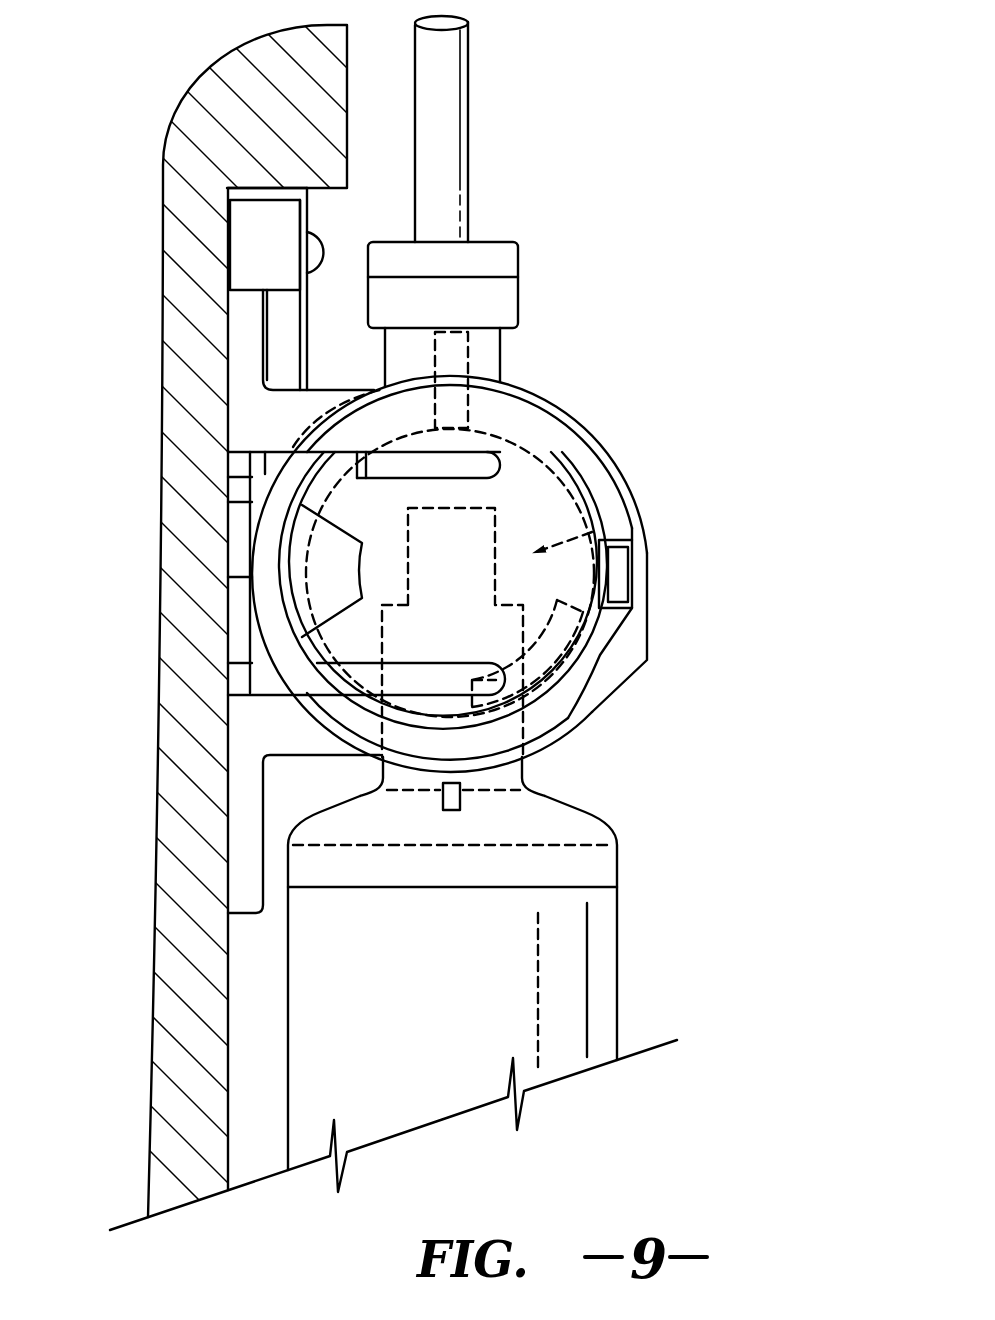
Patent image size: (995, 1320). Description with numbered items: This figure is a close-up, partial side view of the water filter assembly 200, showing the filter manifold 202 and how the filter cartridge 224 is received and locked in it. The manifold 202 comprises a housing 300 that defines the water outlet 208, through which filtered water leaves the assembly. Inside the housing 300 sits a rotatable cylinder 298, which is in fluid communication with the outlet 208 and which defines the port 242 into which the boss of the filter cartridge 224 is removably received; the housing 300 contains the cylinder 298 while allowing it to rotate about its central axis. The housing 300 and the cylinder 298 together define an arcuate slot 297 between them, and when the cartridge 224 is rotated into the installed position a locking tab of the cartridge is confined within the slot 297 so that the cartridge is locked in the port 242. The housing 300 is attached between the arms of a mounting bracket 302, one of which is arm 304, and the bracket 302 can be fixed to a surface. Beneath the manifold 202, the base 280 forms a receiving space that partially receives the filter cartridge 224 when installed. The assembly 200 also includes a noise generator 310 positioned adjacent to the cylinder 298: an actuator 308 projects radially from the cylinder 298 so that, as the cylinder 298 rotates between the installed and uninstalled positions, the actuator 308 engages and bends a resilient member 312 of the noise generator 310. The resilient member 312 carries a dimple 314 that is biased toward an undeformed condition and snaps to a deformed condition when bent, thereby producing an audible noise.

The water filter assembly 200 is at (688, 220).
The filter manifold 202 is at (516, 556).
The water outlet 208 is at (447, 100).
The filter cartridge 224 is at (657, 985).
The port 242 is at (580, 519).
The base 280 is at (195, 813).
The arcuate slot 297 is at (566, 666).
The rotatable cylinder 298 is at (518, 445).
The housing 300 is at (568, 410).
The mounting bracket 302 is at (253, 410).
The arm 304 is at (585, 492).
The actuator 308 is at (468, 353).
The noise generator 310 is at (340, 247).
The resilient member 312 is at (295, 372).
The dimple 314 is at (300, 327).